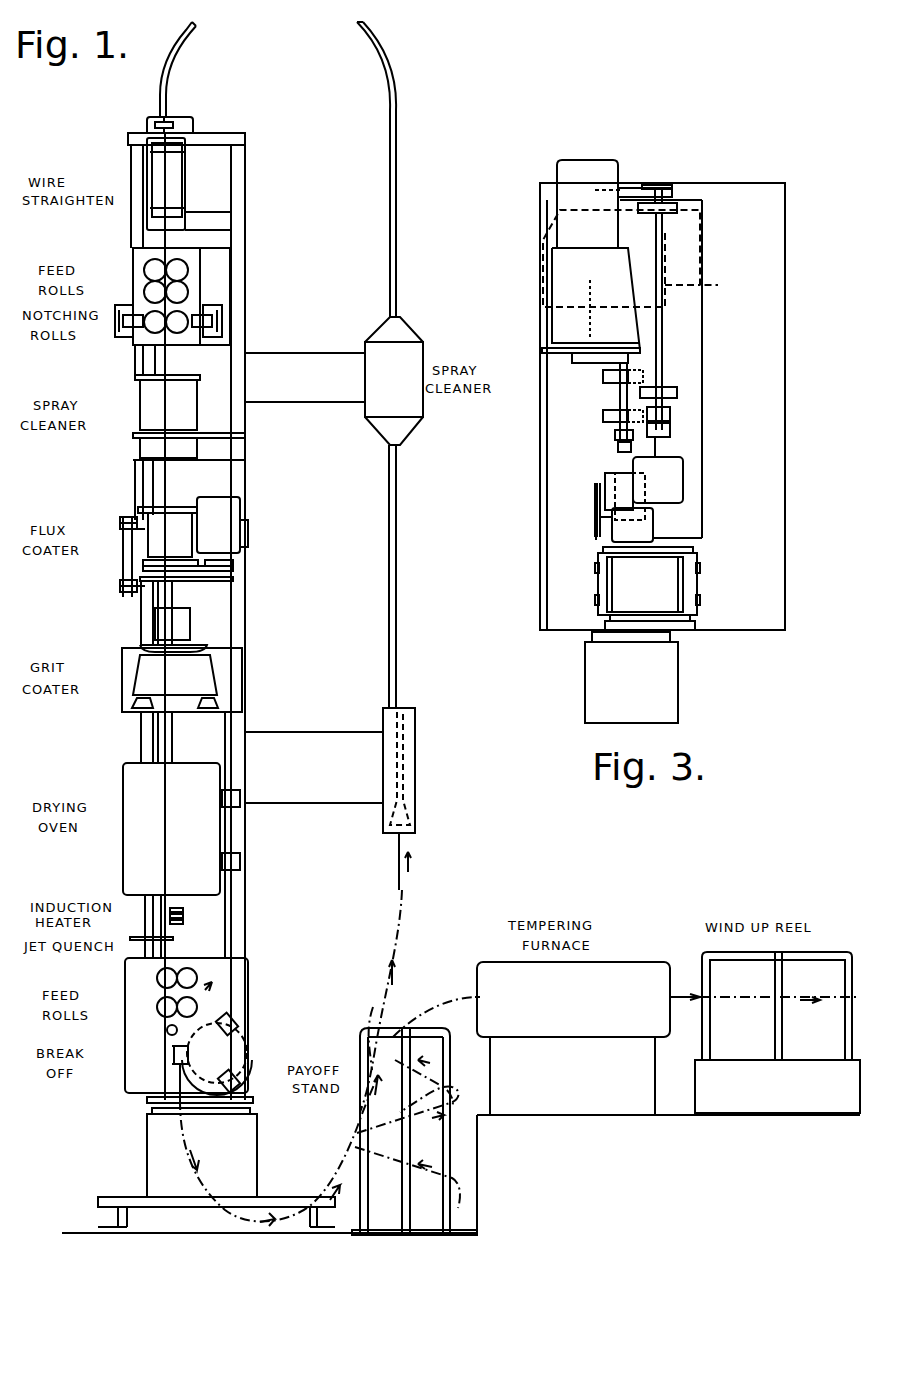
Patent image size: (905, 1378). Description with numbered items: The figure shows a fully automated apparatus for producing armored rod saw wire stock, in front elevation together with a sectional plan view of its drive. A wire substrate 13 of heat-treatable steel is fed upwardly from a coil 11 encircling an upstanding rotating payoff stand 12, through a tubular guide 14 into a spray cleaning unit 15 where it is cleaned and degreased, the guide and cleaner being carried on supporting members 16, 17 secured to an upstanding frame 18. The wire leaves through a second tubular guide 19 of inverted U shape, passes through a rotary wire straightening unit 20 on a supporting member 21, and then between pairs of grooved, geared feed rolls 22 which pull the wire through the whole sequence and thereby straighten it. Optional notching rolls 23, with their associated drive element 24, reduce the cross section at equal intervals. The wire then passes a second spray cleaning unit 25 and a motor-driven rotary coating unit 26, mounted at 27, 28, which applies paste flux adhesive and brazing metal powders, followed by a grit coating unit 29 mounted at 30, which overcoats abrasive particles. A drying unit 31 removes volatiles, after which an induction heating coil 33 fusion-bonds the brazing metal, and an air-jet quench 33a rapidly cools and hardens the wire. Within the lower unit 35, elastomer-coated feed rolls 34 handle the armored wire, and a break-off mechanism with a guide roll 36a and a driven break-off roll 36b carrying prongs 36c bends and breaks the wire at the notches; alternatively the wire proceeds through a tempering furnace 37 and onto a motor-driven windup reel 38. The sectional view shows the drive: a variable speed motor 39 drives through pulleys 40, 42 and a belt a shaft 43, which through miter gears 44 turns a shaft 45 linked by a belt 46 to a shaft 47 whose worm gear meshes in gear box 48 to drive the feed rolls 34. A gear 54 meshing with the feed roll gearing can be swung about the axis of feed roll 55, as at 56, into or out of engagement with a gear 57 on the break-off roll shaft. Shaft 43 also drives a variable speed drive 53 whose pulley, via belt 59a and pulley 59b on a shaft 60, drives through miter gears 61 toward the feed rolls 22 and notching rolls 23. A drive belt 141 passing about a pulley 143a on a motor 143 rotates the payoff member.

In FIG. 1, the coil 11 is at (430, 1102).
In FIG. 1, the payoff stand 12 is at (362, 1120).
In FIG. 1, the wire substrate 13 is at (403, 880).
In FIG. 1, the tubular guide 14 is at (412, 773).
In FIG. 1, the spray cleaning unit 15 is at (410, 400).
In FIG. 1, the supporting member 16 is at (323, 740).
In FIG. 1, the supporting member 17 is at (308, 380).
In FIG. 1, the frame 18 is at (253, 640).
In FIG. 3, the frame 18 is at (697, 582).
In FIG. 1, the second tubular guide 19 is at (395, 253).
In FIG. 1, the rotary wire straightening unit 20 is at (182, 183).
In FIG. 1, the supporting member 21 is at (207, 222).
In FIG. 1, the feed rolls 22 is at (188, 282).
In FIG. 1, the notching rolls 23 is at (168, 330).
In FIG. 1, the notching roll drive 24 is at (196, 338).
In FIG. 1, the second spray cleaning unit 25 is at (137, 425).
In FIG. 1, the rotary coating unit 26 is at (122, 572).
In FIG. 1, the mounting 27 is at (210, 458).
In FIG. 1, the mounting 28 is at (217, 575).
In FIG. 1, the grit coating unit 29 is at (122, 697).
In FIG. 1, the mounting 30 is at (213, 133).
In FIG. 1, the drying unit 31 is at (143, 857).
In FIG. 3, the drying unit 31 is at (660, 672).
In FIG. 1, the induction heating coil 33 is at (185, 915).
In FIG. 1, the air-jet quench 33a is at (173, 939).
In FIG. 1, the feed rolls 34 is at (158, 995).
In FIG. 1, the break off unit 35 is at (132, 970).
In FIG. 1, the guide roll 36a is at (167, 1030).
In FIG. 1, the break-off roll 36b is at (240, 1050).
In FIG. 1, the prongs 36c is at (174, 1050).
In FIG. 1, the tempering furnace 37 is at (590, 1025).
In FIG. 1, the windup reel 38 is at (705, 1018).
In FIG. 3, the variable speed motor 39 is at (575, 292).
In FIG. 3, the pulley 40 is at (600, 358).
In FIG. 3, the pulley 42 is at (603, 372).
In FIG. 3, the shaft 43 is at (617, 393).
In FIG. 3, the miter gears 44 is at (615, 478).
In FIG. 3, the shaft 45 is at (593, 490).
In FIG. 3, the belt 46 is at (593, 510).
In FIG. 3, the shaft 47 is at (593, 535).
In FIG. 3, the gear box 48 is at (645, 530).
In FIG. 3, the variable speed drive 53 is at (735, 287).
In FIG. 1, the gear 54 is at (240, 1035).
In FIG. 1, the feed roll 55 is at (192, 1010).
In FIG. 1, the swing mounting 56 is at (205, 990).
In FIG. 1, the gear 57 is at (245, 1065).
In FIG. 3, the belt 59a is at (628, 188).
In FIG. 3, the pulley 59b is at (670, 185).
In FIG. 3, the shaft 60 is at (662, 363).
In FIG. 3, the miter gears 61 is at (680, 475).
In FIG. 1, the drive belt 141 is at (160, 558).
In FIG. 1, the motor 143 is at (228, 537).
In FIG. 1, the pulley 143a is at (218, 581).